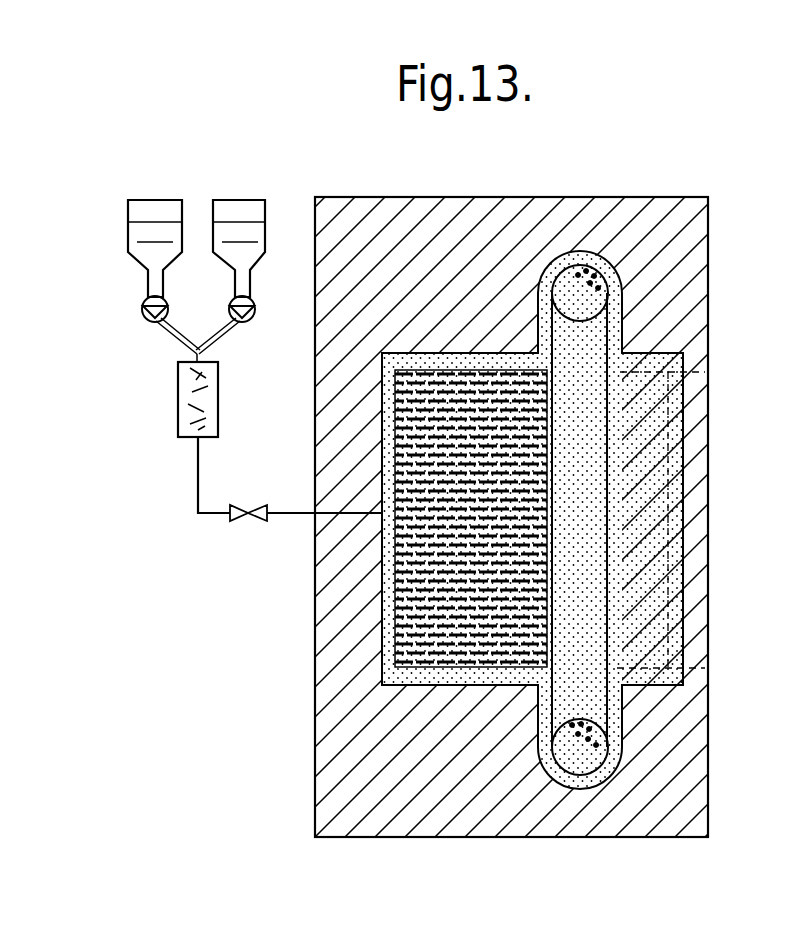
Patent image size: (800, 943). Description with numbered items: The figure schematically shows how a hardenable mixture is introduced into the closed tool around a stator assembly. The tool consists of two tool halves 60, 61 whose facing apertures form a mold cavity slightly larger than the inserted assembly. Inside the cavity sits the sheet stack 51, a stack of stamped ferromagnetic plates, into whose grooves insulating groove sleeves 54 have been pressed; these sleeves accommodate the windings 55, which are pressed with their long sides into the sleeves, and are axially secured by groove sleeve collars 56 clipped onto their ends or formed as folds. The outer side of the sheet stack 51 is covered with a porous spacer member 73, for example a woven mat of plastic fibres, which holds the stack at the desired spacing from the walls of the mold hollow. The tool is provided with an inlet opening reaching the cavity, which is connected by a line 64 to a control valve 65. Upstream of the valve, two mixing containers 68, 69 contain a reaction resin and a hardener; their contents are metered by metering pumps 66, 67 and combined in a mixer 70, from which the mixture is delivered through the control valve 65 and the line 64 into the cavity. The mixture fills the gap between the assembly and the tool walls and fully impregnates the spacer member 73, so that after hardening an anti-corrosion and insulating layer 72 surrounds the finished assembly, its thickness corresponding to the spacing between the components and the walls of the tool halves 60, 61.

The sheet stack 51 is at (400, 618).
The groove sleeves 54 is at (551, 548).
The windings 55 is at (577, 719).
The groove sleeve collars 56 is at (553, 656).
The tool half 60 is at (395, 237).
The tool half 61 is at (330, 712).
The line 64 is at (197, 478).
The control valve 65 is at (256, 523).
The metering pump 66 is at (145, 301).
The metering pump 67 is at (256, 305).
The mixing container 68 is at (158, 208).
The mixing container 69 is at (245, 208).
The mixer 70 is at (190, 398).
The anti-corrosion and insulating layer 72 is at (665, 565).
The spacer member 73 is at (477, 367).